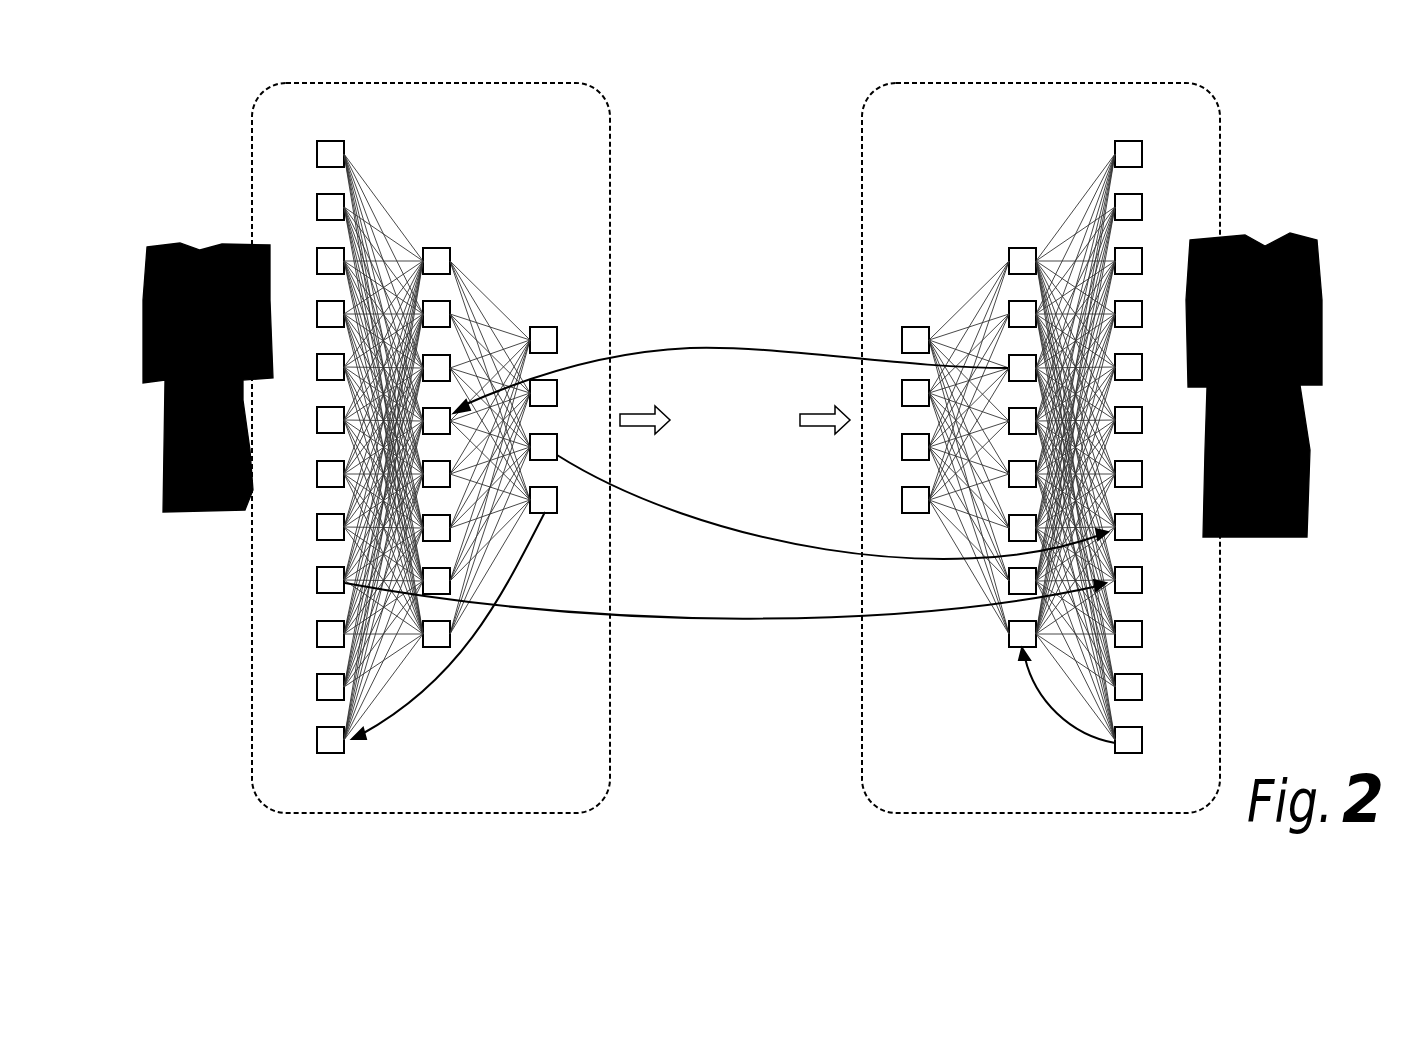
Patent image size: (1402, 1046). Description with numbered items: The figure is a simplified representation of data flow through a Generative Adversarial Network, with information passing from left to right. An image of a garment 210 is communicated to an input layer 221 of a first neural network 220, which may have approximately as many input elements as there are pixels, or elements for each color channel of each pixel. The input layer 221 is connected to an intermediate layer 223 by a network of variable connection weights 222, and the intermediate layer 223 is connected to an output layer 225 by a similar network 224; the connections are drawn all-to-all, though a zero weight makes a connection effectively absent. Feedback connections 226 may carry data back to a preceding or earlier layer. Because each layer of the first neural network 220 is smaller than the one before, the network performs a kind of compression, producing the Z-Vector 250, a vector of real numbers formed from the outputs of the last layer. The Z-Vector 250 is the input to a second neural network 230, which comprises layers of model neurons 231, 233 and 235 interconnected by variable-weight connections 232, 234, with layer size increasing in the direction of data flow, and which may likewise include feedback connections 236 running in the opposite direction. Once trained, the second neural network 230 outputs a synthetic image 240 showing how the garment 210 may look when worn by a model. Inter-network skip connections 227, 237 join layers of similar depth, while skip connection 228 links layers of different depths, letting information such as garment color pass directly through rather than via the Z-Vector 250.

The image of a garment 210 is at (190, 514).
The first neural network 220 is at (560, 786).
The input layer 221 is at (328, 134).
The network of variable connection weights 222 is at (423, 138).
The intermediate layer 223 is at (437, 240).
The similar network of connections 224 is at (530, 255).
The output layer 225 is at (543, 320).
The feedback connections 226 is at (398, 712).
The inter-network connection 227 is at (716, 620).
The inter-network connection 228 is at (757, 540).
The second neural network 230 is at (930, 786).
The layer of model neurons 231 is at (916, 320).
The variable-weight connections 232 is at (1002, 255).
The layer of model neurons 233 is at (1022, 240).
The variable-weight connections 234 is at (1108, 138).
The layer of model neurons 235 is at (1131, 134).
The feedback connections 236 is at (1077, 725).
The inter-network connection 237 is at (712, 349).
The synthetic image 240 is at (1296, 222).
The Z-Vector 250 is at (760, 437).